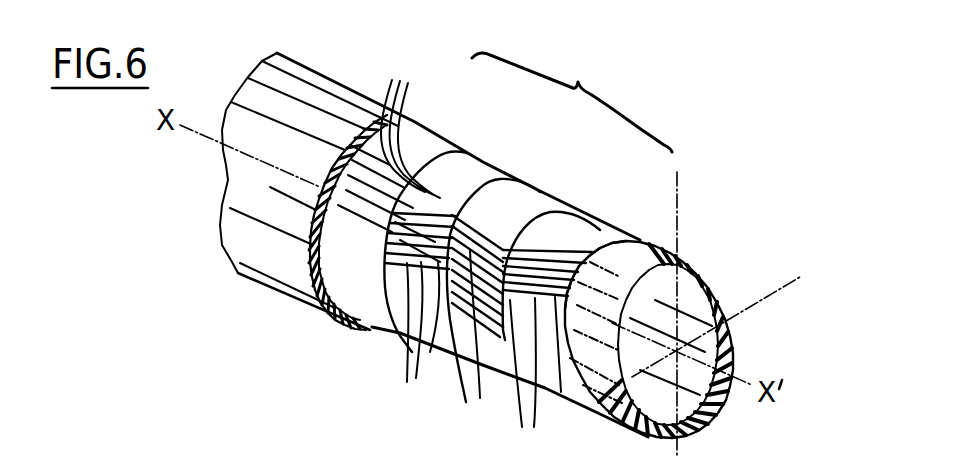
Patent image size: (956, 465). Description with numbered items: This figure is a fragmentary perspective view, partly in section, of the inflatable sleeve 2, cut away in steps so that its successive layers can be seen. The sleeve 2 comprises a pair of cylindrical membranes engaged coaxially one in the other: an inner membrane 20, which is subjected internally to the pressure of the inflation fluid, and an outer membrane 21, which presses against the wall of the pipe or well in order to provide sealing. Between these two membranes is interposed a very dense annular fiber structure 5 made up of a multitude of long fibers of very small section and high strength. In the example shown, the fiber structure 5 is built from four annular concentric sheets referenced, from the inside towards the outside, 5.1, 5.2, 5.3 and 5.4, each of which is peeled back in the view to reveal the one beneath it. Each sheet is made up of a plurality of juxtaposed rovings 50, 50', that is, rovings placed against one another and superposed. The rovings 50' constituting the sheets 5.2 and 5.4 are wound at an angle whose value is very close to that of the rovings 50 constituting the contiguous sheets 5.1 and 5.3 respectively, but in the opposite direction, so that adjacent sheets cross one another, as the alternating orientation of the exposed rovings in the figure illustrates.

The sleeve 2 is at (352, 342).
The outer membrane 21 is at (308, 100).
The fiber structure 5 is at (572, 99).
The fourth sheet 5.4 is at (437, 150).
The third sheet 5.3 is at (480, 182).
The second sheet 5.2 is at (535, 210).
The first sheet 5.1 is at (593, 237).
The inner membrane 20 is at (657, 243).
The rovings 50 is at (479, 360).
The rovings 50' is at (433, 241).